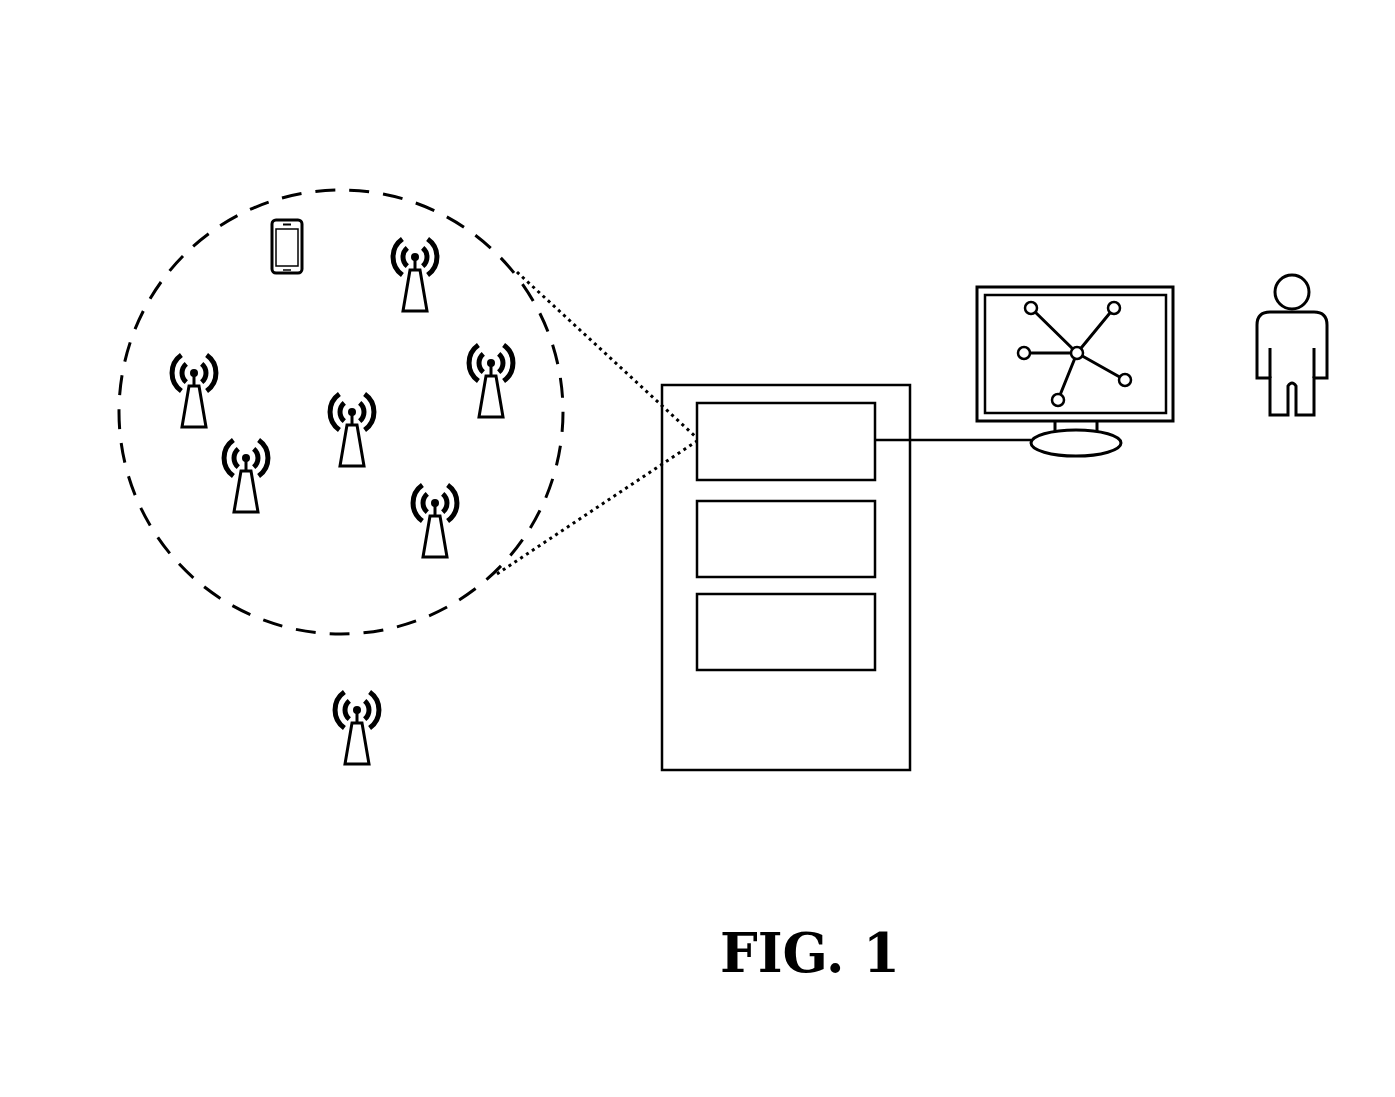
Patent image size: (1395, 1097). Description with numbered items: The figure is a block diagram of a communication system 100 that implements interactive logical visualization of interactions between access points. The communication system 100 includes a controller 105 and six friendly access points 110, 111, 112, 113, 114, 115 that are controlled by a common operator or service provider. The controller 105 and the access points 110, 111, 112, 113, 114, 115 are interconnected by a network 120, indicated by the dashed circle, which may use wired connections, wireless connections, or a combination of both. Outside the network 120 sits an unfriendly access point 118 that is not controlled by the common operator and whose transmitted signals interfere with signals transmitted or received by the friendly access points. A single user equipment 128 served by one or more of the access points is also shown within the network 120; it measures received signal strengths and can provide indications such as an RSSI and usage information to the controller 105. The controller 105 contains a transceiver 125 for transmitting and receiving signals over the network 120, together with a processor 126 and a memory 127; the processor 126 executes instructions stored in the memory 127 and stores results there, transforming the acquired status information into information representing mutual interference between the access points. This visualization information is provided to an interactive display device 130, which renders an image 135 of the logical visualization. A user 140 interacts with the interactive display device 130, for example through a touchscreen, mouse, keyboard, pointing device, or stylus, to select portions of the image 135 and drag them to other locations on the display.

The communication system 100 is at (1283, 108).
The controller 105 is at (770, 740).
The access point 110 is at (351, 469).
The access point 111 is at (193, 429).
The access point 112 is at (414, 311).
The access point 113 is at (490, 420).
The access point 114 is at (434, 559).
The access point 115 is at (246, 514).
The unfriendly access point 118 is at (356, 765).
The network 120 is at (331, 190).
The transceiver 125 is at (770, 466).
The processor 126 is at (770, 565).
The memory 127 is at (770, 660).
The user equipment 128 is at (287, 277).
The interactive display device 130 is at (1073, 458).
The image 135 is at (1011, 353).
The user 140 is at (1328, 330).